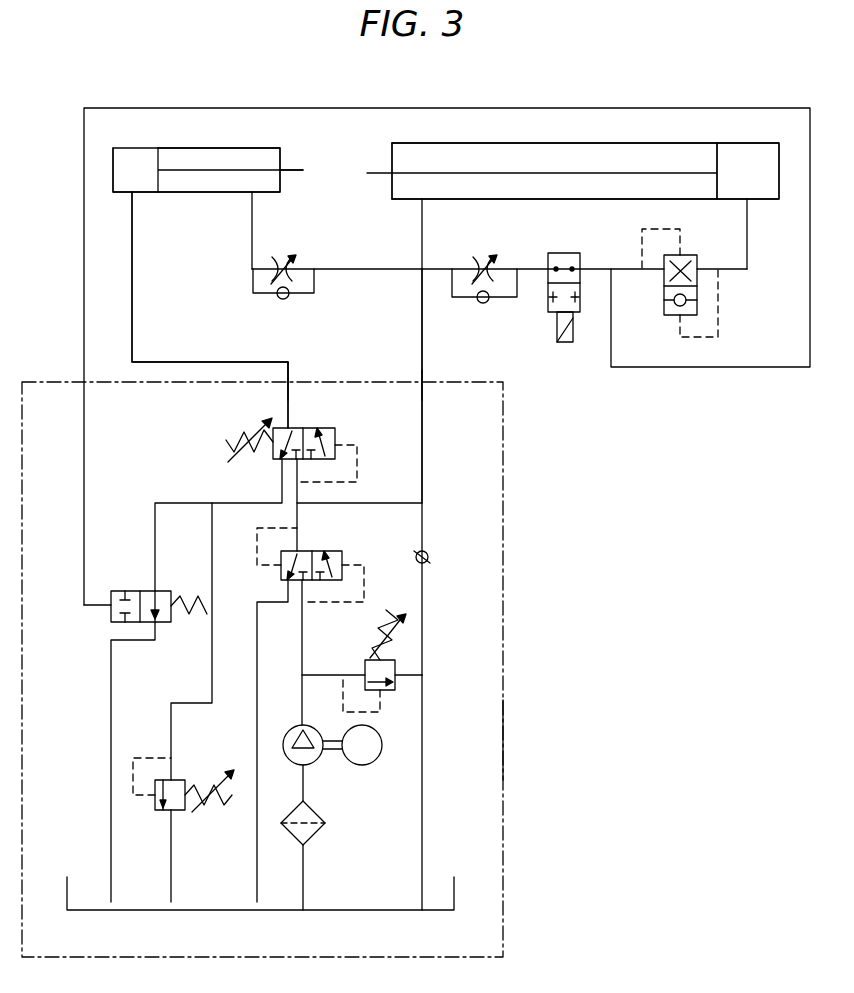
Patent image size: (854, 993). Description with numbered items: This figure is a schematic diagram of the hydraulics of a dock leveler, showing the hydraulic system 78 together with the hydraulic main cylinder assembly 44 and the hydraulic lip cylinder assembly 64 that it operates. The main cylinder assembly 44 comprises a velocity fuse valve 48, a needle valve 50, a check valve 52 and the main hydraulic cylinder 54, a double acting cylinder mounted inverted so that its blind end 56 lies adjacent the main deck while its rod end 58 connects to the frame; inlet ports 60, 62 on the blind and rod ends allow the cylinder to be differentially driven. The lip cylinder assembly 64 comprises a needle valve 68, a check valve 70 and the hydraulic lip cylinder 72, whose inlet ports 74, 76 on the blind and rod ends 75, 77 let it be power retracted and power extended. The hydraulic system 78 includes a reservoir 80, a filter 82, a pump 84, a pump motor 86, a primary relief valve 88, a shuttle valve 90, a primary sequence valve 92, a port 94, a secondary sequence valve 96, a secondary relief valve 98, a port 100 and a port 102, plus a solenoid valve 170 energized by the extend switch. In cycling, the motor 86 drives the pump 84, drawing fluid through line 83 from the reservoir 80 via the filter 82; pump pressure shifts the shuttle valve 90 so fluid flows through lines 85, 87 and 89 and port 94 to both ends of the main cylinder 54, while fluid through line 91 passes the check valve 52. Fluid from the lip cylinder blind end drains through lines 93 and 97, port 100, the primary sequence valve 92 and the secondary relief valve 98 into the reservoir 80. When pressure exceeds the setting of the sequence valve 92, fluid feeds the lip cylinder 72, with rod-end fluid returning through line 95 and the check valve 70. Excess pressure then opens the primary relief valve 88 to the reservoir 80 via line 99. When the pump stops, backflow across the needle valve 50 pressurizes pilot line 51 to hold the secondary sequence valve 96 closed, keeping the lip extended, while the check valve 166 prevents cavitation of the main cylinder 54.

The hydraulic main cylinder assembly 44 is at (651, 122).
The velocity fuse valve 48 is at (664, 312).
The needle valve 50 is at (483, 262).
The pilot line 51 is at (735, 367).
The check valve 52 is at (486, 302).
The main hydraulic cylinder 54 is at (545, 143).
The blind end 56 is at (779, 150).
The rod end 58 is at (392, 158).
The inlet port 60 is at (747, 200).
The inlet port 62 is at (420, 200).
The hydraulic lip cylinder assembly 64 is at (243, 125).
The needle valve 68 is at (282, 262).
The check valve 70 is at (286, 298).
The hydraulic lip cylinder 72 is at (205, 146).
The inlet port 74 is at (132, 196).
The blind end 75 is at (128, 146).
The inlet port 76 is at (250, 196).
The rod end 77 is at (280, 148).
The hydraulic system 78 is at (503, 735).
The reservoir 80 is at (392, 910).
The filter 82 is at (324, 823).
The line 83 is at (300, 633).
The pump 84 is at (312, 765).
The line 85 is at (299, 525).
The pump motor 86 is at (370, 765).
The line 87 is at (375, 503).
The primary relief valve 88 is at (390, 692).
The line 89 is at (424, 345).
The shuttle valve 90 is at (342, 552).
The line 91 is at (428, 266).
The primary sequence valve 92 is at (335, 430).
The line 93 is at (133, 325).
The port 94 is at (424, 386).
The line 95 is at (385, 270).
The secondary sequence valve 96 is at (165, 622).
The line 97 is at (318, 672).
The secondary relief valve 98 is at (186, 812).
The line 99 is at (424, 858).
The port 100 is at (290, 380).
The port 102 is at (84, 382).
The check valve 166 is at (428, 560).
The solenoid valve 170 is at (568, 252).